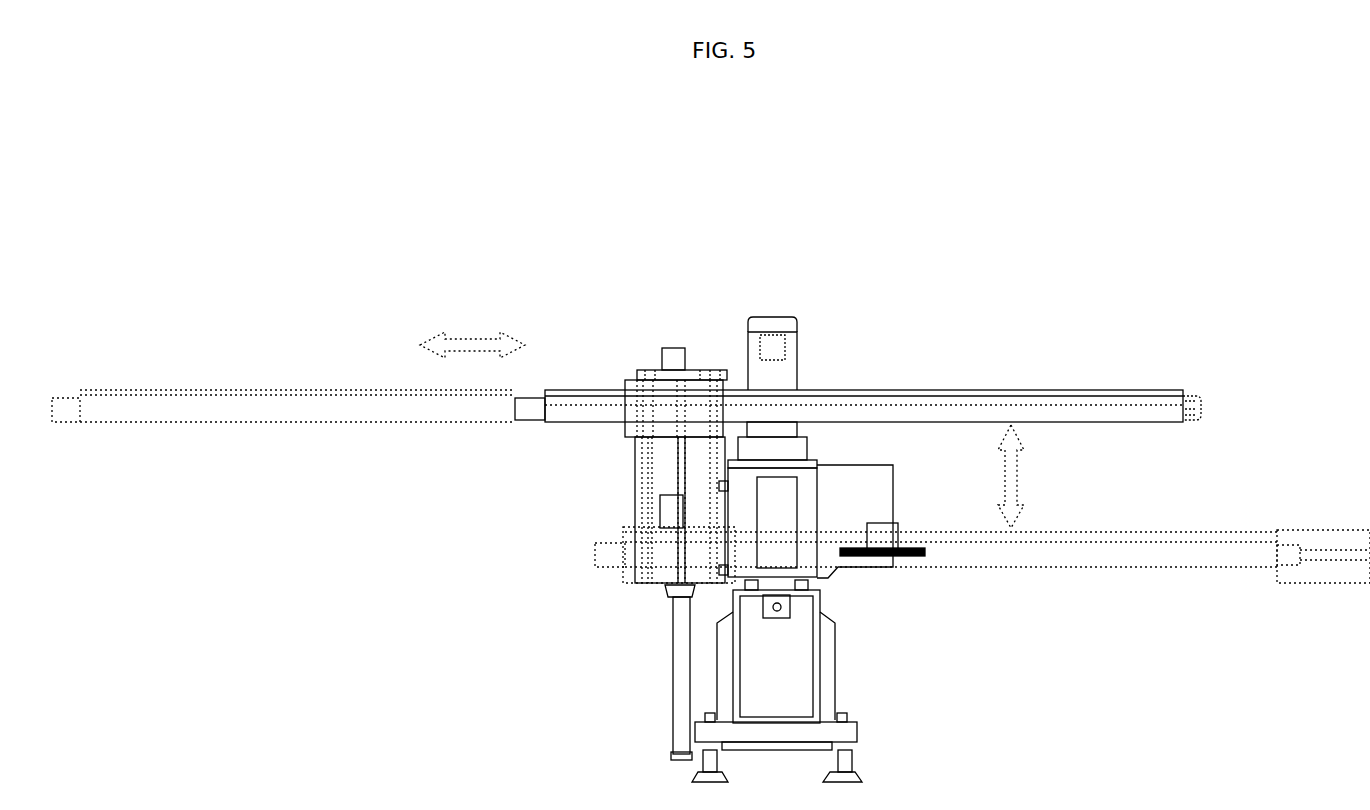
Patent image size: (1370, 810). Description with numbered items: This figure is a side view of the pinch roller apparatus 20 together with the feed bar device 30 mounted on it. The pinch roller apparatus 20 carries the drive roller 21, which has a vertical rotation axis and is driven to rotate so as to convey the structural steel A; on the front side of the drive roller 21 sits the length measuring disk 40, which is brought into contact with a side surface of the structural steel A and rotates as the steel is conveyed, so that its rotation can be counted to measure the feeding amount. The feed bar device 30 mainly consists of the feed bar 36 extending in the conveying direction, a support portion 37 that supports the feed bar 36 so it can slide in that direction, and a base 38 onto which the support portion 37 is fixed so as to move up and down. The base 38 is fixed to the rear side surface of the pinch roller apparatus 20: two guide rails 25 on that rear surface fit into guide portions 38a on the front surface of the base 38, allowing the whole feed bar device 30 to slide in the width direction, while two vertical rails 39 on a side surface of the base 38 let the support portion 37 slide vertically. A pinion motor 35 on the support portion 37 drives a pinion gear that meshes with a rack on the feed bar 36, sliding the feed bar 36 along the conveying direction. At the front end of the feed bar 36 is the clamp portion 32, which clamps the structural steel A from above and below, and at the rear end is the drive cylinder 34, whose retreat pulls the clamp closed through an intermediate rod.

The pinch roller apparatus 20 is at (783, 316).
The drive roller 21 is at (800, 505).
The guide rails 25 is at (670, 597).
The feed bar device 30 is at (700, 372).
The clamp portion 32 is at (1190, 392).
The drive cylinder 34 is at (535, 391).
The pinion motor 35 is at (672, 347).
The feed bar 36 is at (1112, 388).
The support portion 37 is at (622, 432).
The base 38 is at (635, 455).
The guide portions 38a is at (810, 590).
The rails 39 is at (635, 488).
The length measuring disk 40 is at (912, 543).
The structural steel A is at (1330, 592).